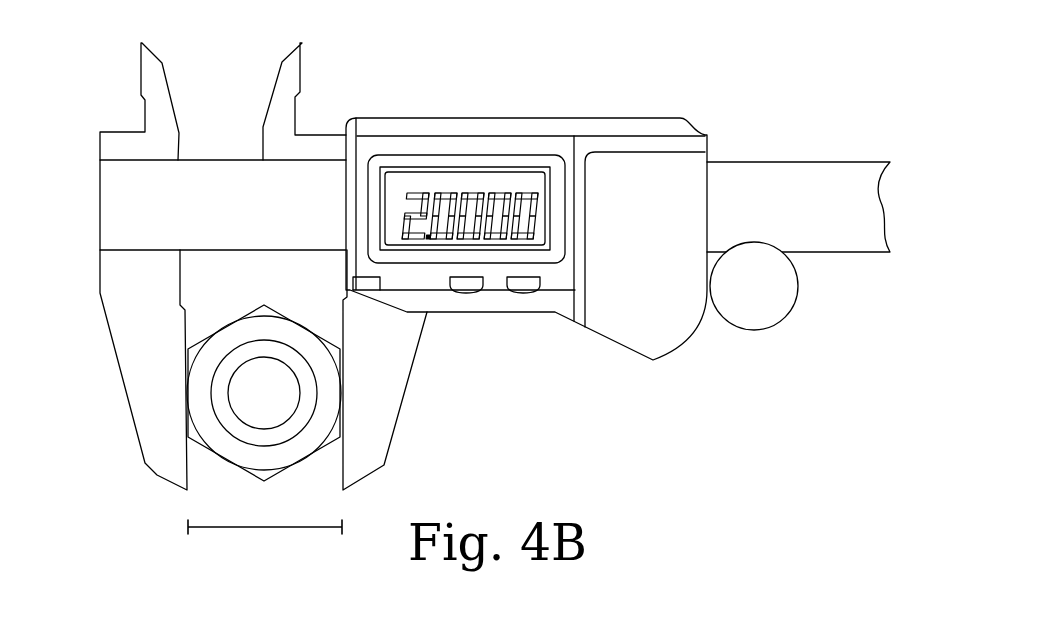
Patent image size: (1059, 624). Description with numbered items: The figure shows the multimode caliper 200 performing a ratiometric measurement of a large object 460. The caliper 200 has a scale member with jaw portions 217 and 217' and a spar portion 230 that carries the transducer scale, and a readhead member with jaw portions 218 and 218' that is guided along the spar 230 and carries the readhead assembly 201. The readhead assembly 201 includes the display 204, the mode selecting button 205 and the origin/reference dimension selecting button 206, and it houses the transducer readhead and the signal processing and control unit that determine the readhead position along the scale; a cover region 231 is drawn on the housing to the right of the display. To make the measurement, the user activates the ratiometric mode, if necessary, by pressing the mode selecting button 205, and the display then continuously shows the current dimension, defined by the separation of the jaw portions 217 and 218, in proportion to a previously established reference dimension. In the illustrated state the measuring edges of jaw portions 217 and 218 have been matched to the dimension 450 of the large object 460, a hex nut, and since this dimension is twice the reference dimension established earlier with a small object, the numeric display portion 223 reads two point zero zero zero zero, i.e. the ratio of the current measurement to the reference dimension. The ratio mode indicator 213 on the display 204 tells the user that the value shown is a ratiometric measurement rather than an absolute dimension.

The multimode measuring instrument 200 is at (728, 68).
The readhead assembly 201 is at (428, 97).
The display 204 is at (370, 293).
The mode selecting button 205 is at (463, 293).
The origin/reference dimension selecting button 206 is at (522, 293).
The ratio mode indicator 213 is at (523, 173).
The jaw portion 217 is at (121, 370).
The jaw portion 217' is at (169, 101).
The jaw portion 218 is at (403, 370).
The jaw portion 218' is at (319, 96).
The numeric display portion 223 is at (407, 210).
The spar portion 230 is at (100, 207).
The housing cover 231 is at (617, 117).
The dimension 450 is at (235, 528).
The large object 460 is at (292, 470).